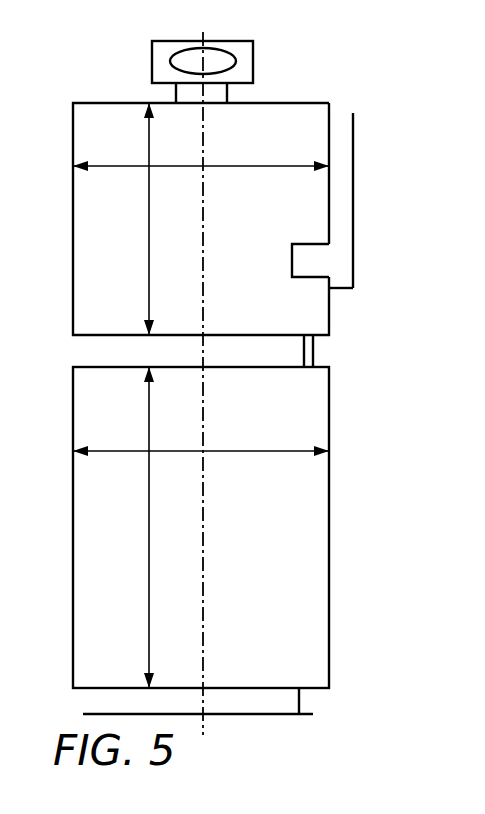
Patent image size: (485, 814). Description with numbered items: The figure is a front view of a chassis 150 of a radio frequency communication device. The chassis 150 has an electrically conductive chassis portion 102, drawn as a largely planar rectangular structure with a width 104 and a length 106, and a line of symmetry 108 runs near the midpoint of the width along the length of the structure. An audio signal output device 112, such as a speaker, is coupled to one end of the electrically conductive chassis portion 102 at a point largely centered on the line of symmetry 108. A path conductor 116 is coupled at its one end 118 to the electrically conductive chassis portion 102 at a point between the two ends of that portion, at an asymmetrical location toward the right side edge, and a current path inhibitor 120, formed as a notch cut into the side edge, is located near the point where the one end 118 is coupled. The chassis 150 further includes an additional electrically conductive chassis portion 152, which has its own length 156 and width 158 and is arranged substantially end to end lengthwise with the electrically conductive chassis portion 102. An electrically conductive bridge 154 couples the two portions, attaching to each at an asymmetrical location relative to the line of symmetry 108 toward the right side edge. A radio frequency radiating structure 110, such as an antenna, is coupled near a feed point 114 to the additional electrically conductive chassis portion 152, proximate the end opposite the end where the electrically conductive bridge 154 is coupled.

The electrically conductive chassis portion 102 is at (85, 221).
The width 104 is at (272, 162).
The length 106 is at (148, 275).
The line of symmetry 108 is at (204, 622).
The radio frequency radiating structure 110 is at (278, 715).
The audio signal output device 112 is at (157, 59).
The feed point 114 is at (301, 698).
The path conductor 116 is at (354, 163).
The one end of the path conductor 118 is at (338, 290).
The current path inhibitor 120 is at (330, 264).
The chassis 150 is at (334, 76).
The additional electrically conductive chassis portion 152 is at (318, 530).
The electrically conductive bridge 154 is at (315, 350).
The length 156 is at (148, 621).
The width 158 is at (260, 450).